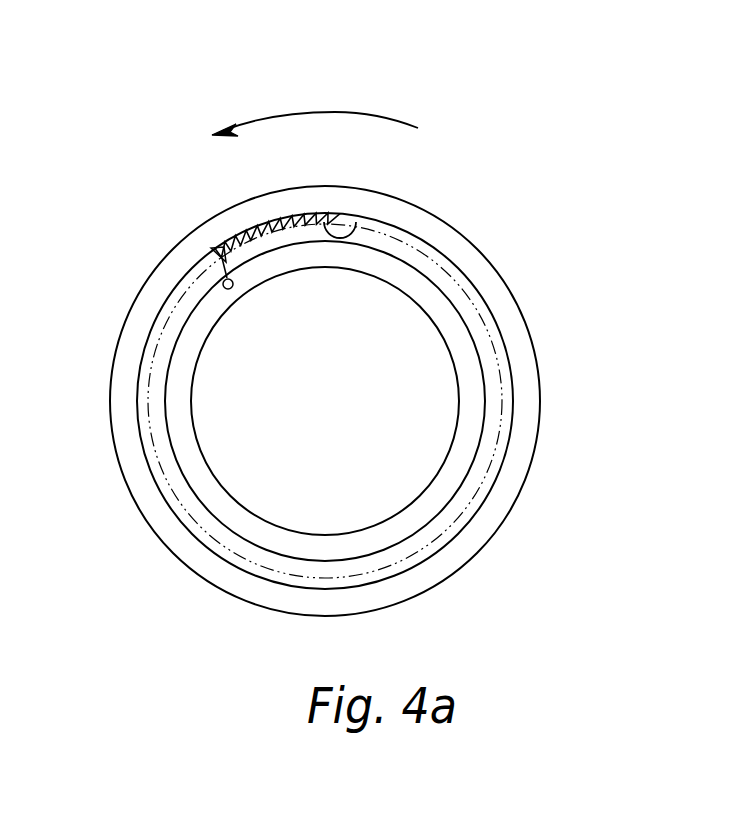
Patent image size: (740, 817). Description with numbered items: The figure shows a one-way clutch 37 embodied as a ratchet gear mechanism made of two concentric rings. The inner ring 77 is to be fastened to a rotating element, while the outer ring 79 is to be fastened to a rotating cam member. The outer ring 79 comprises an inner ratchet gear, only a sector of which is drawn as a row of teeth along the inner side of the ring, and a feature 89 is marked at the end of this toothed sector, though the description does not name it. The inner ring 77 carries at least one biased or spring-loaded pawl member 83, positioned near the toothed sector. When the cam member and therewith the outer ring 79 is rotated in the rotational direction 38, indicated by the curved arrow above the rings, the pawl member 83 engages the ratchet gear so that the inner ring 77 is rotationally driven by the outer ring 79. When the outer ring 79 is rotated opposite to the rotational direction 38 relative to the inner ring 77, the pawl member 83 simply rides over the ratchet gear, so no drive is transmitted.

The one-way clutch 37 is at (497, 222).
The rotational direction 38 is at (348, 112).
The inner ring 77 is at (448, 483).
The outer ring 79 is at (527, 378).
The pawl member 83 is at (218, 252).
The ratchet teeth notch 89 is at (356, 222).